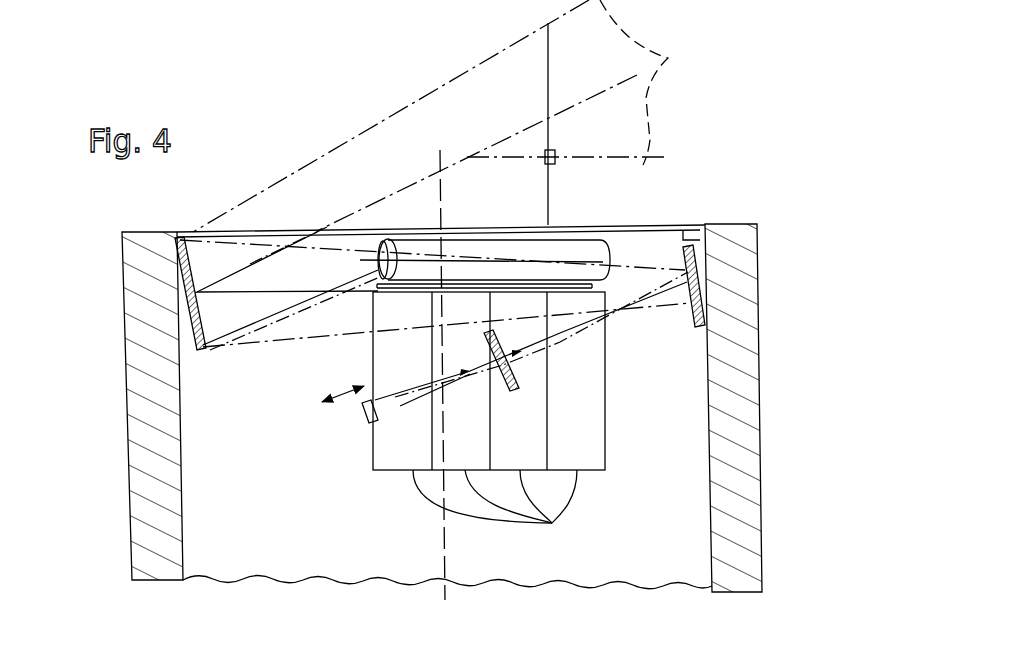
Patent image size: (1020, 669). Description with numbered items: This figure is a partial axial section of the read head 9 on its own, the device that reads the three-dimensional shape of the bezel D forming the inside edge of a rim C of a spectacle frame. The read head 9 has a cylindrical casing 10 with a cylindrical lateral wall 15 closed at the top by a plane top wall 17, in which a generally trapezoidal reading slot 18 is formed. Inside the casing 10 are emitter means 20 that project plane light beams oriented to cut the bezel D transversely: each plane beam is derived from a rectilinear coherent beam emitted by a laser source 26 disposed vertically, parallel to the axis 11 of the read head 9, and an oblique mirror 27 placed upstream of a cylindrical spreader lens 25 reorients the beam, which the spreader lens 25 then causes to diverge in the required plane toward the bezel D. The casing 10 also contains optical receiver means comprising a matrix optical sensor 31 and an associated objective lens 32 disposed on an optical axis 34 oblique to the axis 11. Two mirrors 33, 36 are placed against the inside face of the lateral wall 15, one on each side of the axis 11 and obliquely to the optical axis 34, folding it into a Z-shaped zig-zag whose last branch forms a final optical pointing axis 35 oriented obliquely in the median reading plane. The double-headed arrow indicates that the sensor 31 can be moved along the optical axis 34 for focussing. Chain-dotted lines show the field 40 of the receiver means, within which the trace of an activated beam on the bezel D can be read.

The read head 9 is at (836, 295).
The cylindrical casing 10 is at (819, 474).
The axis of the read head 11 is at (447, 556).
The cylindrical lateral wall 15 is at (755, 404).
The plane top wall 17 is at (153, 232).
The reading slot 18 is at (681, 228).
The emitter means 20 is at (439, 427).
The cylindrical spreader lens 25 is at (603, 238).
The laser source 26 is at (495, 514).
The oblique mirror 27 is at (372, 283).
The matrix optical sensor 31 is at (363, 412).
The objective lens 32 is at (510, 392).
The mirror 33 is at (700, 245).
The optical axis 34 is at (409, 405).
The final optical pointing axis 35 is at (588, 91).
The mirror 36 is at (203, 350).
The field of the optical receiver means 40 is at (668, 58).
The rim C is at (556, 152).
The bezel D is at (545, 165).